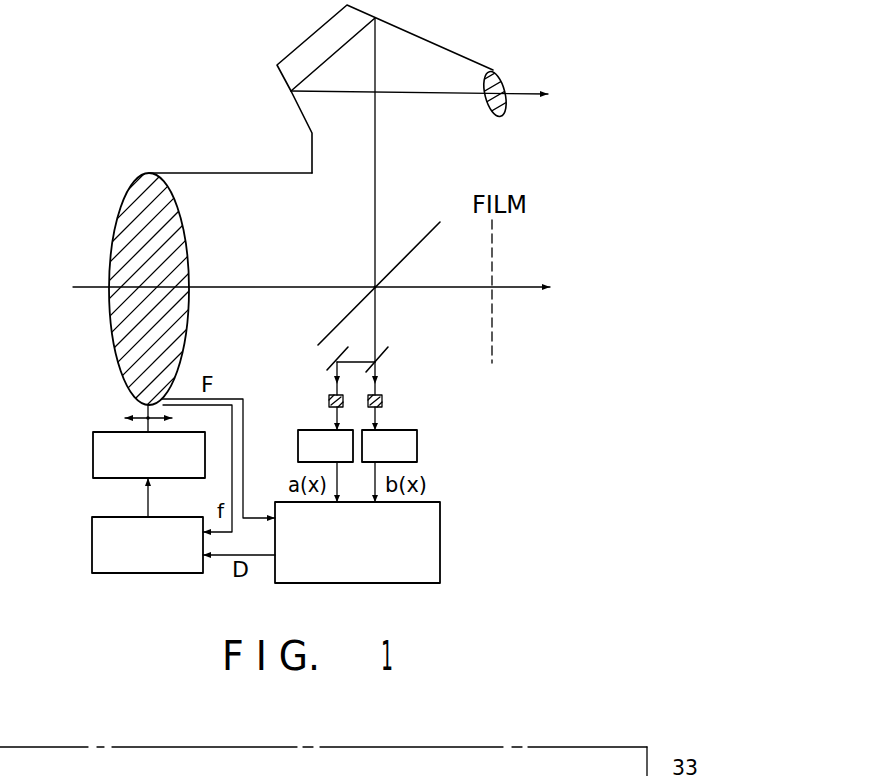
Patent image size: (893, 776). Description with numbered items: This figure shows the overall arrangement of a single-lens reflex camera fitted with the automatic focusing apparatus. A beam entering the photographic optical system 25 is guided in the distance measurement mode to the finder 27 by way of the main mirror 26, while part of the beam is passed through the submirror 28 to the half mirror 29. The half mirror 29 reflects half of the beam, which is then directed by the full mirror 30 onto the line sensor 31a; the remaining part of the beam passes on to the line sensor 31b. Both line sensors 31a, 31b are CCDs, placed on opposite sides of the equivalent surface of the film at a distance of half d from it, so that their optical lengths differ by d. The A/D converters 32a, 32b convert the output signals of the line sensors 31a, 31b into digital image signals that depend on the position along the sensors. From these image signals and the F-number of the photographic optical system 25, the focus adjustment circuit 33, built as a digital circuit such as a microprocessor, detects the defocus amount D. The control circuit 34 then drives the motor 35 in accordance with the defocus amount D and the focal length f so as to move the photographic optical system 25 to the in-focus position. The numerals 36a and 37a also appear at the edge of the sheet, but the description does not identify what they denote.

The photographic optical system 25 is at (173, 202).
The main mirror 26 is at (420, 240).
The finder 27 is at (532, 91).
The submirror 28 is at (380, 294).
The half mirror 29 is at (383, 353).
The full mirror 30 is at (332, 366).
The line sensor 31a is at (328, 402).
The line sensor 31b is at (383, 400).
The A/D converter 32a is at (297, 437).
The A/D converter 32b is at (417, 447).
The focus adjustment circuit 33 is at (441, 540).
The control circuit 34 is at (92, 543).
The motor 35 is at (93, 455).
The (partial lower figure) element 36a is at (57, 765).
The (partial lower figure) element 37a is at (172, 765).